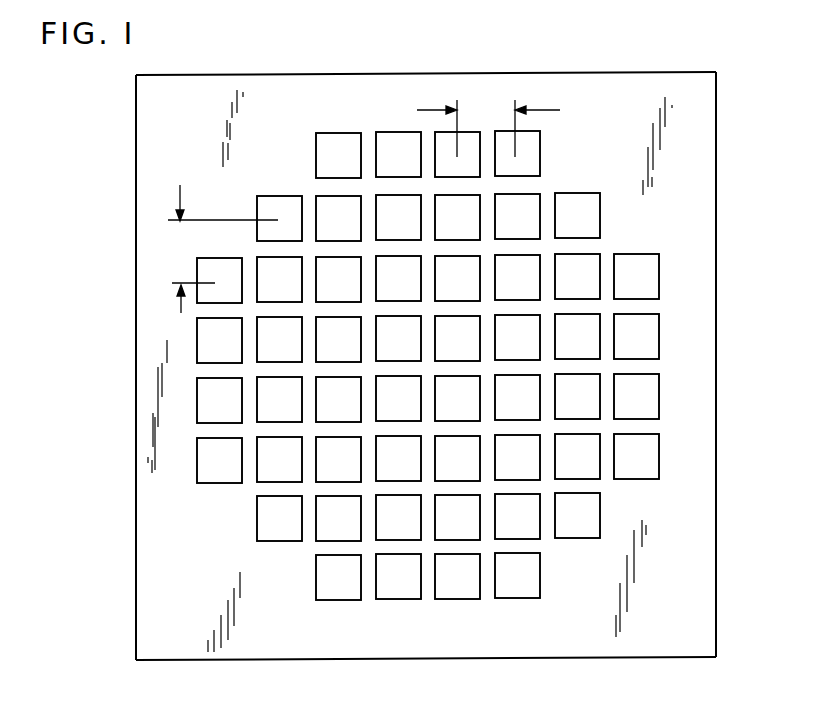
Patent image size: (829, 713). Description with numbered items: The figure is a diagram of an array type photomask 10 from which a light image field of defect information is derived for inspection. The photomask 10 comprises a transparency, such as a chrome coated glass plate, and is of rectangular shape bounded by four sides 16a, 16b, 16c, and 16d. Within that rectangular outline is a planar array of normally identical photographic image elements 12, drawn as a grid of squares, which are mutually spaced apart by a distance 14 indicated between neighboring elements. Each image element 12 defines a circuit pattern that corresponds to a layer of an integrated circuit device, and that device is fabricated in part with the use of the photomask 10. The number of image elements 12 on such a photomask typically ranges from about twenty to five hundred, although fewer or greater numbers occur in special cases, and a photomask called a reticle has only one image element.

The photomask 10 is at (102, 365).
The photographic image elements 12 is at (621, 254).
The distance 14 is at (548, 100).
The side 16a is at (500, 661).
The side 16b is at (717, 313).
The side 16c is at (463, 72).
The side 16d is at (136, 152).